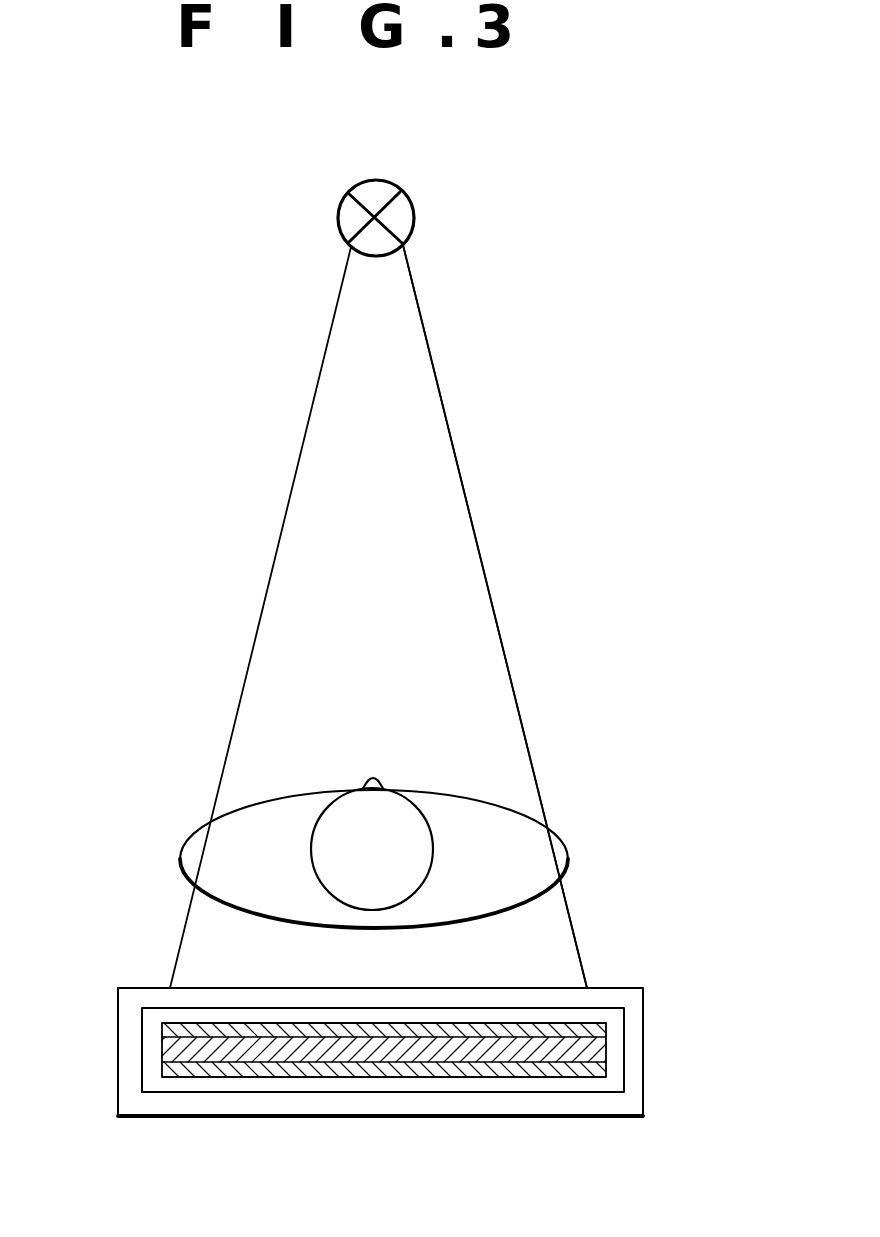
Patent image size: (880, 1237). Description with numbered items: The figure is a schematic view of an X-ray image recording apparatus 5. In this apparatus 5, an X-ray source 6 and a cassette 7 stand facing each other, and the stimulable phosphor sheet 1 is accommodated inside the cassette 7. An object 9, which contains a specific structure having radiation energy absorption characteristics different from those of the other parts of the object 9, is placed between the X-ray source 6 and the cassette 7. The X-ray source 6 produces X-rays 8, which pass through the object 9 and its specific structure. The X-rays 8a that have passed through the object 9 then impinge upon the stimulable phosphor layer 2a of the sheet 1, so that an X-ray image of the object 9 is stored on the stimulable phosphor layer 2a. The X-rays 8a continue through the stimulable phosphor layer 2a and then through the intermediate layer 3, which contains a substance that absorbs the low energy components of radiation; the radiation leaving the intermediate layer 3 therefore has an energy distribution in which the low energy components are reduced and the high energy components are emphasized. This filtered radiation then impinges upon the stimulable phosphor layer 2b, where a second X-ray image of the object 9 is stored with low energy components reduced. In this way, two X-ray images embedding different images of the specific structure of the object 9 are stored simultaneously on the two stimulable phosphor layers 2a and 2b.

The stimulable phosphor sheet 1 is at (441, 1013).
The stimulable phosphor layer 2a is at (607, 1027).
The stimulable phosphor layer 2b is at (598, 1070).
The intermediate layer 3 is at (162, 1052).
The X-ray image recording apparatus 5 is at (655, 375).
The X-ray source 6 is at (416, 222).
The cassette 7 is at (118, 1103).
The X-rays 8 is at (460, 472).
The X-rays having passed through the object 8a is at (577, 938).
The object 9 is at (443, 790).